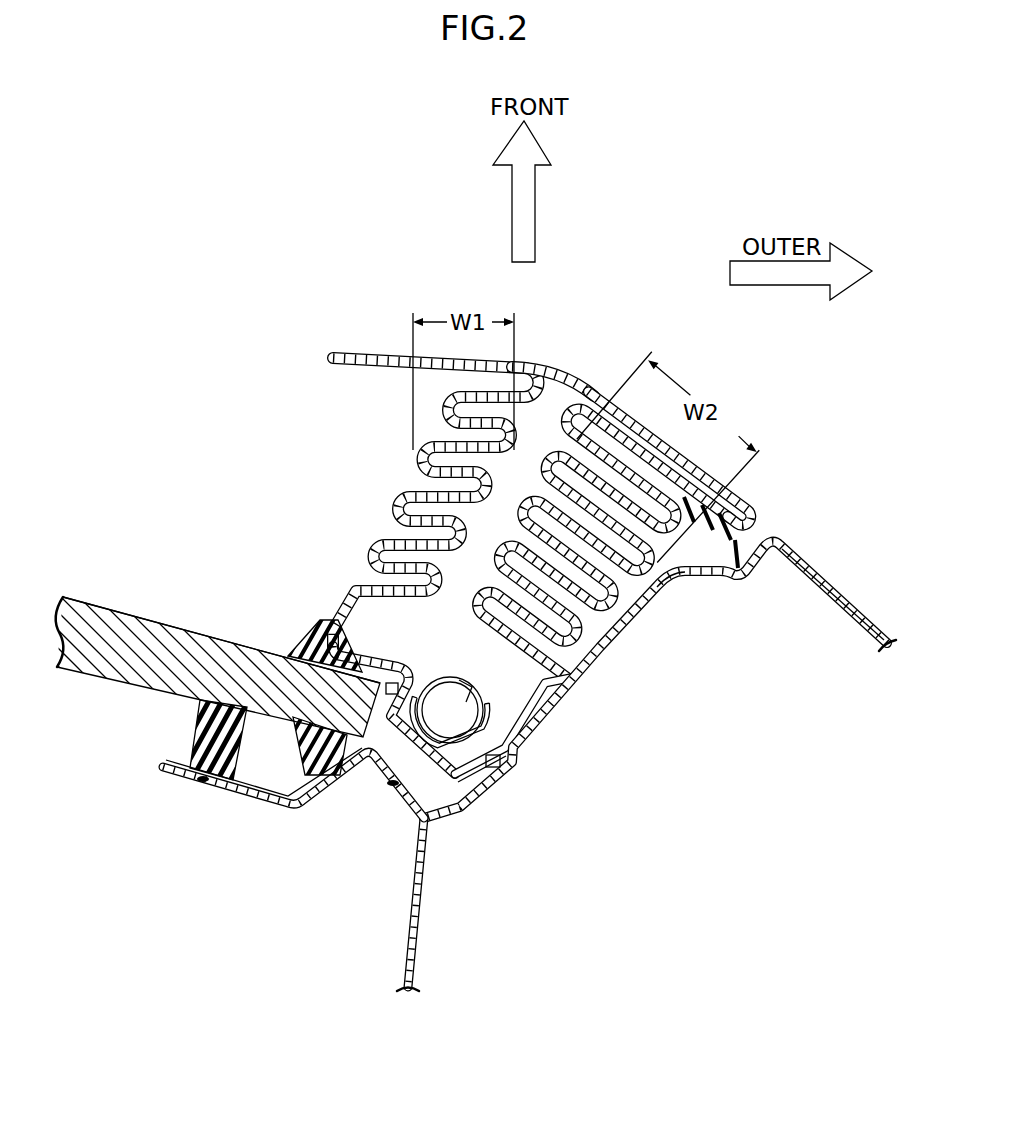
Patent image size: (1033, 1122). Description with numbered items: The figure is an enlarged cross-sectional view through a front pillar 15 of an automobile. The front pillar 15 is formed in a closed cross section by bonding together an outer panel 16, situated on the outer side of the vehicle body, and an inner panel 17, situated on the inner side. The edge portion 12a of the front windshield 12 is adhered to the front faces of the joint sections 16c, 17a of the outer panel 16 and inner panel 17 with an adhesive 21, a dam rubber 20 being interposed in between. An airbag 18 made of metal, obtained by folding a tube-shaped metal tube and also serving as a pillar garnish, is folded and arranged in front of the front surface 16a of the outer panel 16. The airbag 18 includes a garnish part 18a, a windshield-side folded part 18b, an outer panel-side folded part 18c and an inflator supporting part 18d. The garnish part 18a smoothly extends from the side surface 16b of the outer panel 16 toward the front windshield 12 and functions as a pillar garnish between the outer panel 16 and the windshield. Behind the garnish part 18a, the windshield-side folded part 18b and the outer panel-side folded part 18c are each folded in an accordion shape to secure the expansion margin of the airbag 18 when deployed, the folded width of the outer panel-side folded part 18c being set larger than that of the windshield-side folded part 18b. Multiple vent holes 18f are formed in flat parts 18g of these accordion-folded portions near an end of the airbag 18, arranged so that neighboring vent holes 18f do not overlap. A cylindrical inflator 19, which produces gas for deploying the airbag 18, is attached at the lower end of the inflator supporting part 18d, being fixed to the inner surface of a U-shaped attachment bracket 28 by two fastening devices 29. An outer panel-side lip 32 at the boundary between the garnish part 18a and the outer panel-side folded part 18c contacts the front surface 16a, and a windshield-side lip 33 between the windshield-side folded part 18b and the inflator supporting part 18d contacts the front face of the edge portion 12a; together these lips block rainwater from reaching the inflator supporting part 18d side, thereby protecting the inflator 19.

The front windshield 12 is at (291, 637).
The edge portion of the front windshield 12a is at (237, 652).
The front pillar 15 is at (529, 756).
The outer panel 16 is at (531, 705).
The front surface of the outer panel 16a is at (660, 592).
The side surface of the outer panel 16b is at (816, 565).
The joint section of the outer panel 16c is at (270, 792).
The inner panel 17 is at (373, 871).
The joint section of the inner panel 17a is at (240, 806).
The airbag 18 is at (531, 572).
The garnish part 18a is at (566, 357).
The windshield-side folded part 18b is at (519, 532).
The outer panel-side folded part 18c is at (637, 633).
The inflator supporting part 18d is at (430, 762).
The vent holes 18f is at (464, 444).
The flat parts 18g is at (524, 532).
The inflator 19 is at (442, 687).
The dam rubber 20 is at (197, 741).
The adhesive 21 is at (333, 790).
The attachment bracket 28 is at (470, 778).
The fastening devices 29 is at (487, 707).
The outer panel-side lip 32 is at (738, 573).
The windshield-side lip 33 is at (317, 640).